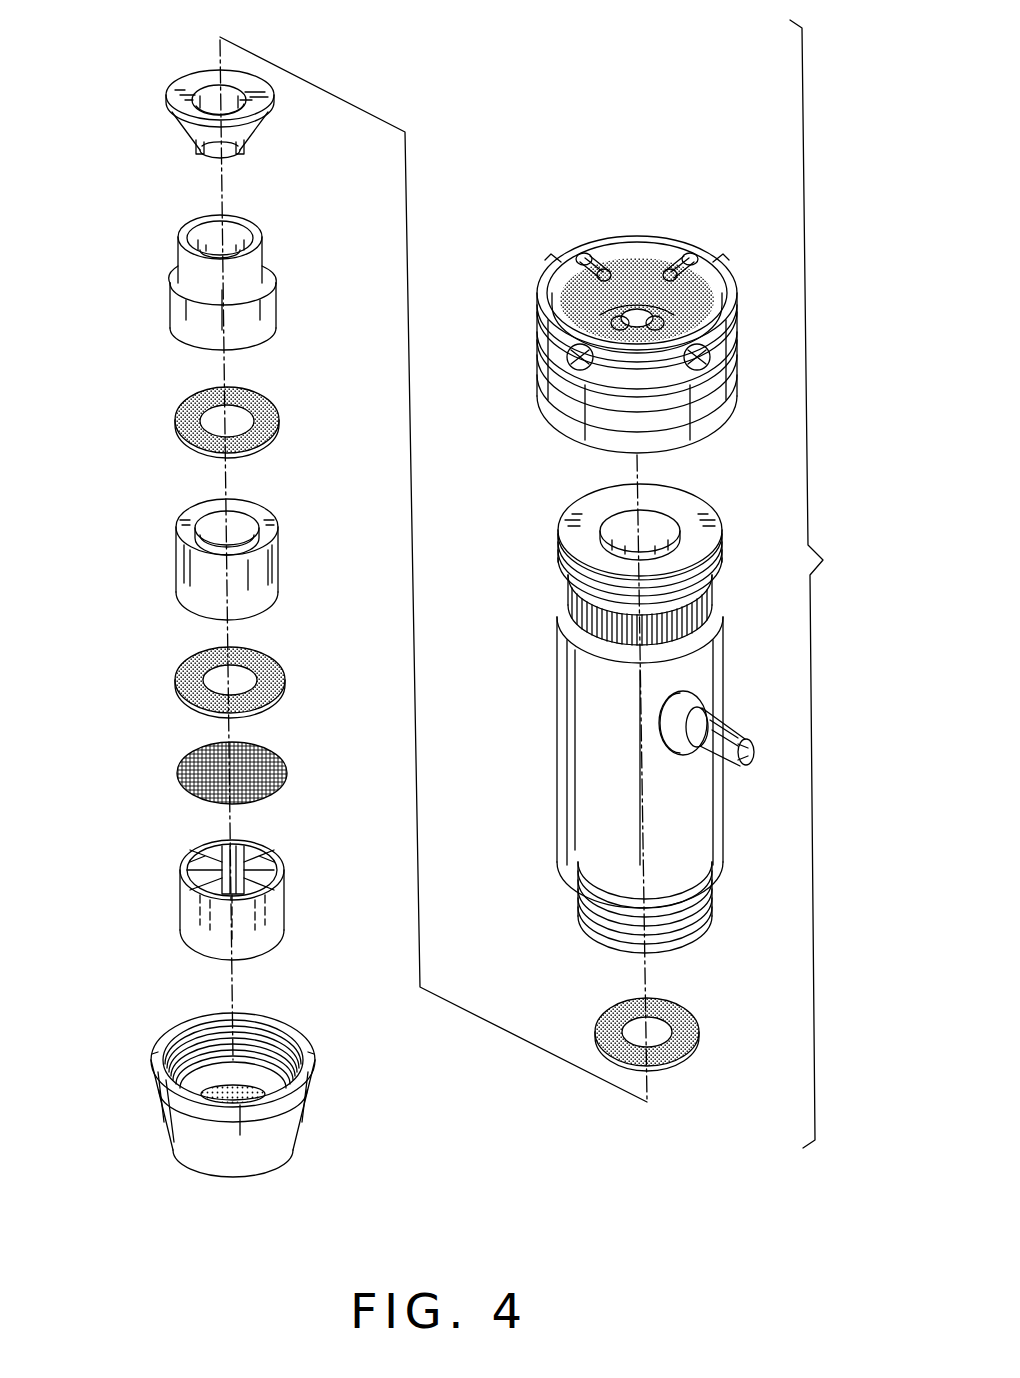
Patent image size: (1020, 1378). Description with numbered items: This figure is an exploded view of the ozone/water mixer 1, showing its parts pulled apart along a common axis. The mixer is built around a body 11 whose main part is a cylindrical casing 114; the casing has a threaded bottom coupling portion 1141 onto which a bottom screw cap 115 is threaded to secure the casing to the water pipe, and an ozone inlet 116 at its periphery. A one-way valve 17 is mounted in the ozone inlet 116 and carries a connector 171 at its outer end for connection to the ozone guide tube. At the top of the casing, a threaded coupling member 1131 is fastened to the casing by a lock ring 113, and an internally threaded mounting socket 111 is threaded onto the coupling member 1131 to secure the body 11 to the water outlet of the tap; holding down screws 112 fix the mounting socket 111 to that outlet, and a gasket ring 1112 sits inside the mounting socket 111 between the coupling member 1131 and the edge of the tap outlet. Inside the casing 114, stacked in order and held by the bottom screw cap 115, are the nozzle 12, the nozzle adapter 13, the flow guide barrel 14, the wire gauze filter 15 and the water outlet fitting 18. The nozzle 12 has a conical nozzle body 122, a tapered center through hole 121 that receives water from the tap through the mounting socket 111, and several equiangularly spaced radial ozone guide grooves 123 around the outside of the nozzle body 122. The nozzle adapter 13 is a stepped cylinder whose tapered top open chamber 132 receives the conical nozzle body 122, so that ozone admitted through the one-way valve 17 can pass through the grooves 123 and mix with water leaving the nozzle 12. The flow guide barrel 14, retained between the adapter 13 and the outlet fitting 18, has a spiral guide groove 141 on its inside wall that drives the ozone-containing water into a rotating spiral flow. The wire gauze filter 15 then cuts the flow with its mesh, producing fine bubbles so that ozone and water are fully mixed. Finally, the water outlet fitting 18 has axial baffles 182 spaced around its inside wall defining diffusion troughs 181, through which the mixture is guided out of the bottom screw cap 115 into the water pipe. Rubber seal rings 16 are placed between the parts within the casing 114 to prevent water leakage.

The ozone/water mixer 1 is at (356, 569).
The body 11 is at (625, 584).
The nozzle 12 is at (219, 104).
The tapered center through hole 121 is at (210, 97).
The conical nozzle body 122 is at (264, 174).
The radial ozone guide grooves 123 is at (219, 170).
The nozzle adapter 13 is at (221, 282).
The tapered top open chamber 132 is at (262, 239).
The flow guide barrel 14 is at (258, 549).
The spiral guide groove 141 is at (260, 516).
The wire gauze filter 15 is at (259, 767).
The rubber seal rings 16 is at (437, 729).
The water outlet fitting 18 is at (274, 881).
The diffusion troughs 181 is at (274, 848).
The axial baffles 182 is at (278, 860).
The mounting socket 111 is at (623, 311).
The holding down screws 112 is at (580, 262).
The gasket ring 1112 is at (630, 275).
The lock ring 113 is at (675, 564).
The threaded coupling member 1131 is at (696, 535).
The cylindrical casing 114 is at (634, 785).
The threaded bottom coupling portion 1141 is at (600, 907).
The bottom screw cap 115 is at (263, 1095).
The ozone inlet 116 is at (726, 693).
The one-way valve 17 is at (733, 768).
The connector 171 is at (745, 797).